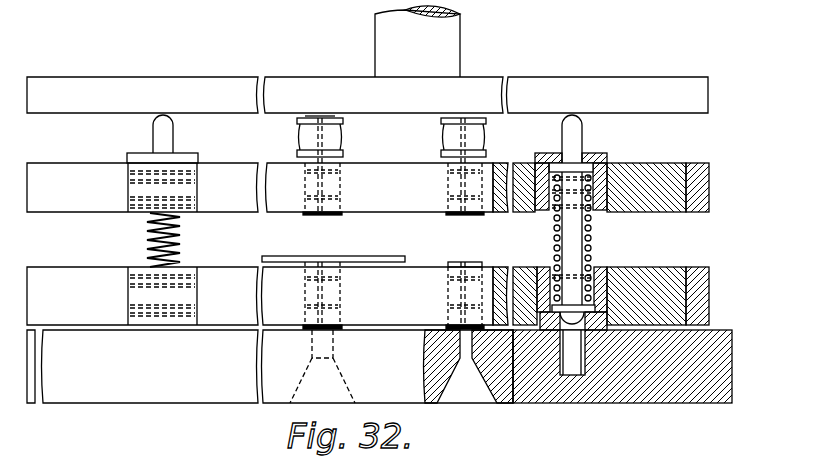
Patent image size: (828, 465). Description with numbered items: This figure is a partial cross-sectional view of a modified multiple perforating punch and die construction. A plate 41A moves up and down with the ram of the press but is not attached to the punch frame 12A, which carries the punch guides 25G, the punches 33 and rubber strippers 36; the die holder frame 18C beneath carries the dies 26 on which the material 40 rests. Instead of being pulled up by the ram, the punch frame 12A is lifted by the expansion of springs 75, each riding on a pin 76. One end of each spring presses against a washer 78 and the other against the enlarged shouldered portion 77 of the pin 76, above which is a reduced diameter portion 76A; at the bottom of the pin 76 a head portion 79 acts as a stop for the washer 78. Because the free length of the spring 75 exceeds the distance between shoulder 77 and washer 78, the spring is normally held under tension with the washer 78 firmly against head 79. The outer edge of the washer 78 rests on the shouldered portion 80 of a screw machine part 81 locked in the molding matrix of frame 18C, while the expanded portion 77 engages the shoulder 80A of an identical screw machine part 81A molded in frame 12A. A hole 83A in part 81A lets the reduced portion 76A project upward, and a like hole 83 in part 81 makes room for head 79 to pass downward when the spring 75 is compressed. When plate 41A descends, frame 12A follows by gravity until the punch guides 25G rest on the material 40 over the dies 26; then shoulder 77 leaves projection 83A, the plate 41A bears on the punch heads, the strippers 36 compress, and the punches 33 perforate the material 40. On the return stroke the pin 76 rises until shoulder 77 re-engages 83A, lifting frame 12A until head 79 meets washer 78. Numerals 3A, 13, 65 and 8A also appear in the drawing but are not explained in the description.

The plate 41A is at (710, 86).
The reduced diameter portion of pin 76A is at (173, 132).
The bushing head 3A is at (310, 118).
The rubber stripper 36 is at (343, 140).
The punch 33 is at (487, 140).
The punch guide 25G is at (342, 190).
The spring 75 is at (183, 246).
The material 40 is at (365, 256).
The die 26 is at (478, 262).
The shoulder of screw machine part 80A is at (553, 160).
The hole in screw machine part 83A is at (584, 153).
The enlarged shouldered portion of pin 77 is at (608, 160).
The punch frame 12A is at (710, 186).
The plate insert 13 is at (673, 200).
The screw machine part 81A is at (541, 207).
The pin 76 is at (585, 228).
The screw machine part 81 is at (548, 272).
The washer 78 is at (610, 305).
The die holder assembly frame 18C is at (710, 290).
The base plate 65 is at (150, 378).
The shouldered portion of screw machine part 80 is at (550, 357).
The pin end 8A is at (571, 362).
The head portion of pin 79 is at (577, 324).
The hole in screw machine part 83 is at (606, 369).